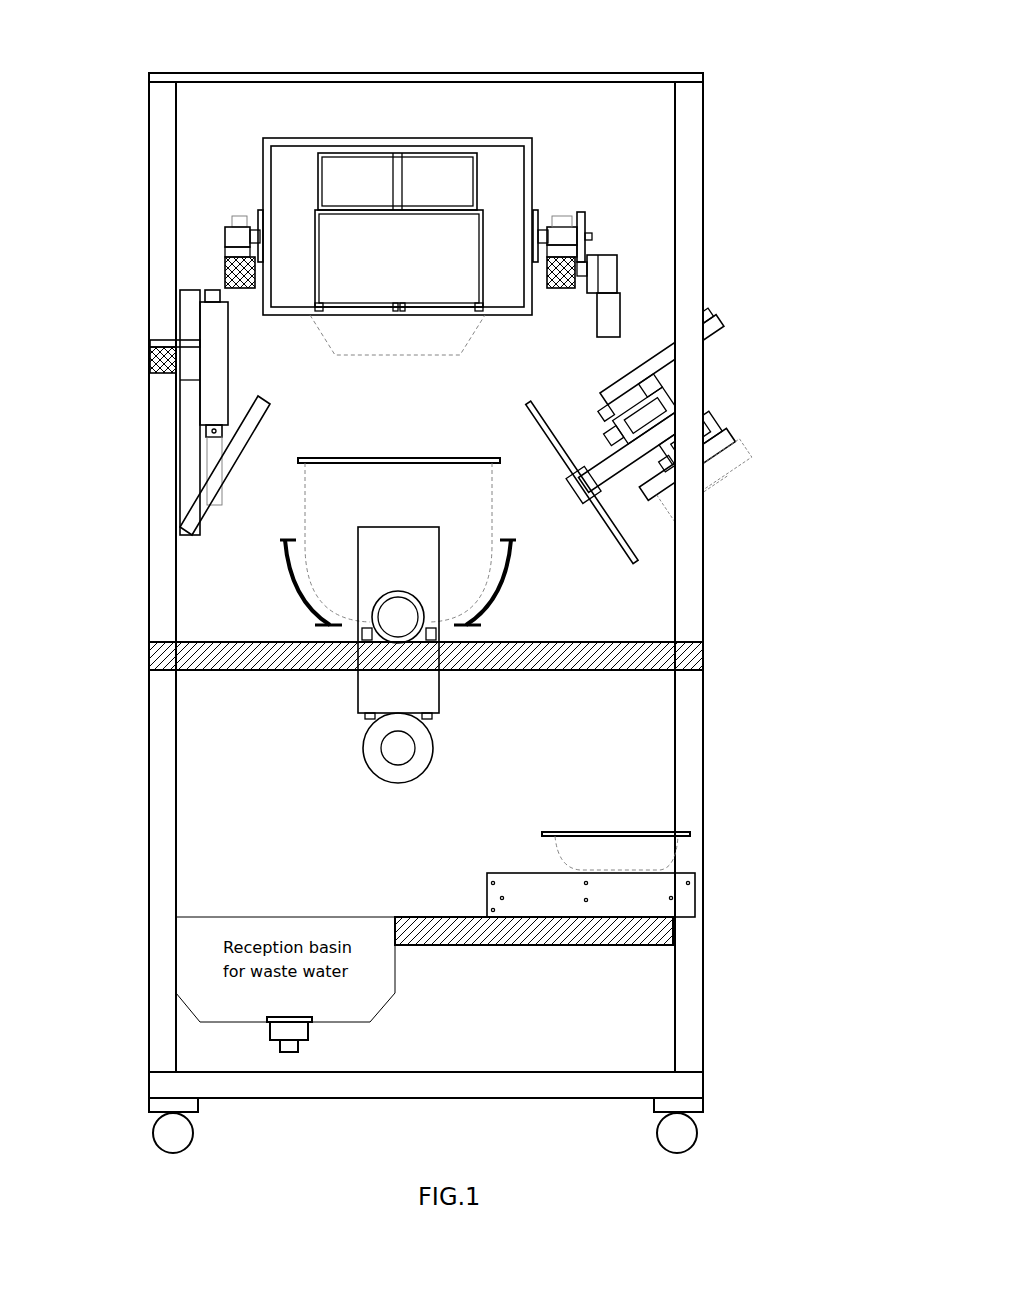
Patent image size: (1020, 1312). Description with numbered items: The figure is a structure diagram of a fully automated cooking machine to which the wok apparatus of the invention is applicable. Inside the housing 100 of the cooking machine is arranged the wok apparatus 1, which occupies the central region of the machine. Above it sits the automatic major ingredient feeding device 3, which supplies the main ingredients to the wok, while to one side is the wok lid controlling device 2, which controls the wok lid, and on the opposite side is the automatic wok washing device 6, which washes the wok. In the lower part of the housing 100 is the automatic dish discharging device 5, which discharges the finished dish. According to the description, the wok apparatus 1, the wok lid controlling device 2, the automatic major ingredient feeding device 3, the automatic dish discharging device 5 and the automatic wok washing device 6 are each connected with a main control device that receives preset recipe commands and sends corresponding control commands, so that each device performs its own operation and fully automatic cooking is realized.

The housing 100 is at (696, 235).
The wok apparatus 1 is at (470, 692).
The wok lid controlling device 2 is at (664, 432).
The automatic major ingredient feeding device 3 is at (432, 120).
The automatic dish discharging device 5 is at (697, 869).
The automatic wok washing device 6 is at (198, 423).